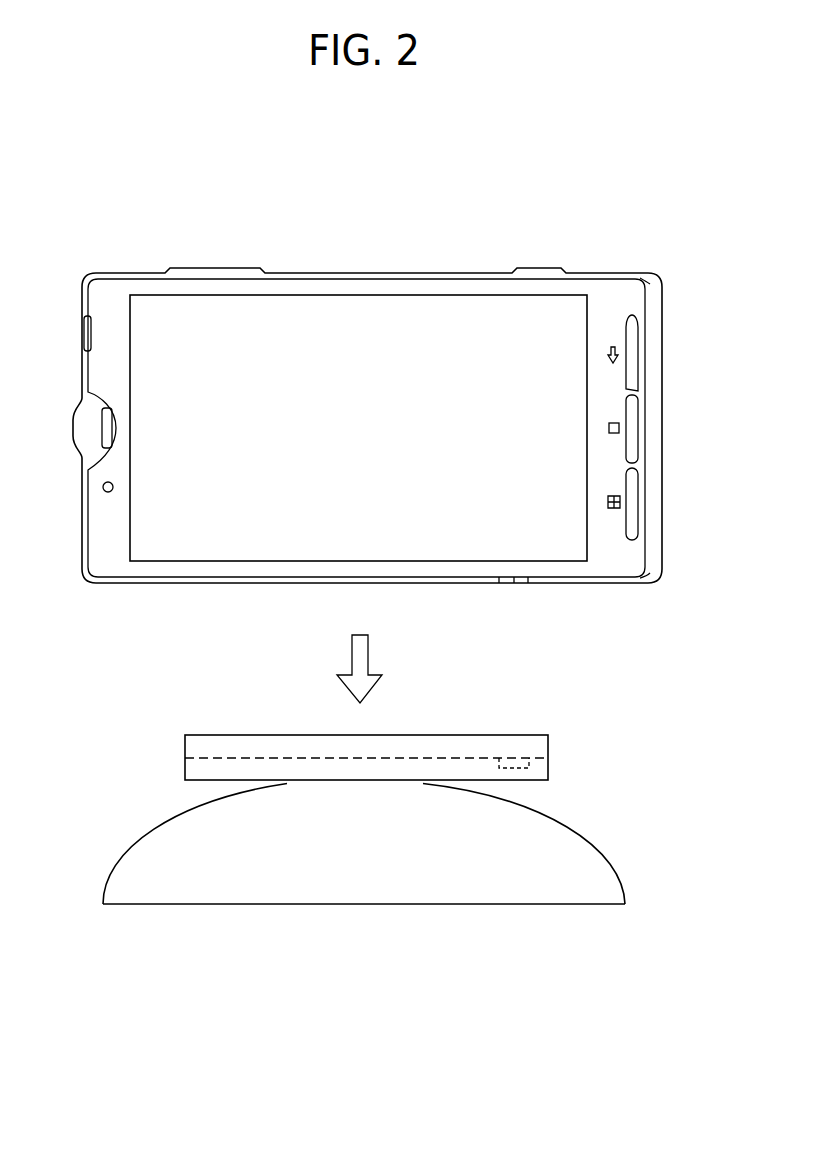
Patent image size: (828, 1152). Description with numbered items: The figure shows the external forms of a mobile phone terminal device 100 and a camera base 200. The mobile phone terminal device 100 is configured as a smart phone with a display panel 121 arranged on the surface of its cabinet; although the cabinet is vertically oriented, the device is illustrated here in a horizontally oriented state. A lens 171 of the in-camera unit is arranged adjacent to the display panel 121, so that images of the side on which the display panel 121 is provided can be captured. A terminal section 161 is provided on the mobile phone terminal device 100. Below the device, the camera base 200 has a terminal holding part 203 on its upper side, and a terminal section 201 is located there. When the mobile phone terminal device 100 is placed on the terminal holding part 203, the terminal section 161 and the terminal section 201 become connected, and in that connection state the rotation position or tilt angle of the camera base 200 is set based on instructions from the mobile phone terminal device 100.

The mobile phone terminal device 100 is at (404, 272).
The display panel 121 is at (324, 315).
The terminal section 161 is at (513, 585).
The lens 171 is at (103, 491).
The camera base 200 is at (438, 906).
The terminal section 201 is at (518, 768).
The terminal holding part 203 is at (490, 732).